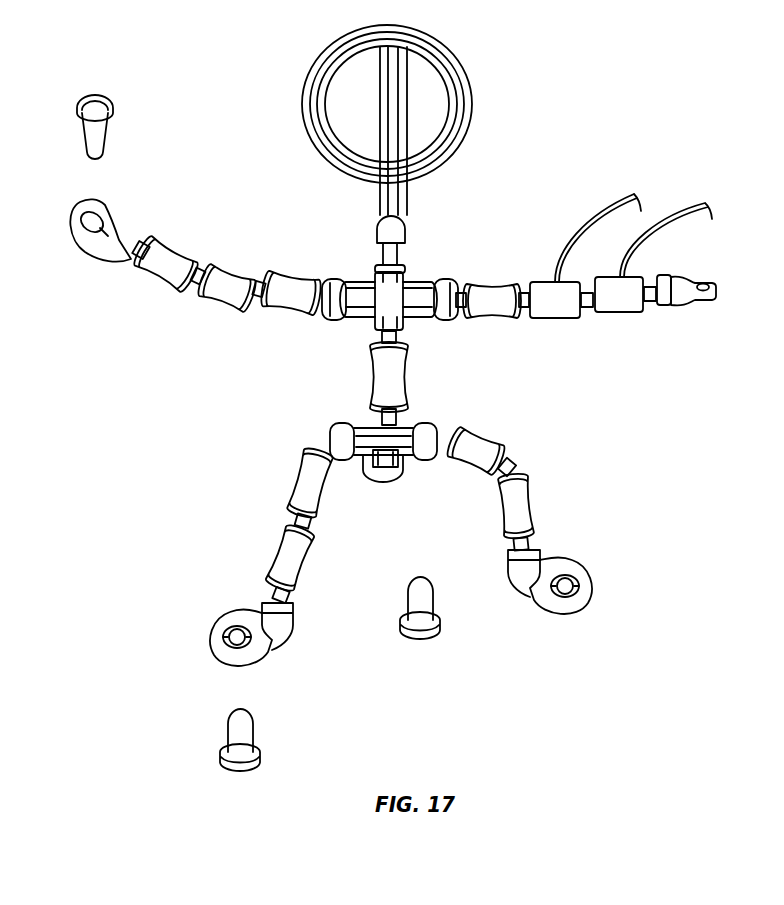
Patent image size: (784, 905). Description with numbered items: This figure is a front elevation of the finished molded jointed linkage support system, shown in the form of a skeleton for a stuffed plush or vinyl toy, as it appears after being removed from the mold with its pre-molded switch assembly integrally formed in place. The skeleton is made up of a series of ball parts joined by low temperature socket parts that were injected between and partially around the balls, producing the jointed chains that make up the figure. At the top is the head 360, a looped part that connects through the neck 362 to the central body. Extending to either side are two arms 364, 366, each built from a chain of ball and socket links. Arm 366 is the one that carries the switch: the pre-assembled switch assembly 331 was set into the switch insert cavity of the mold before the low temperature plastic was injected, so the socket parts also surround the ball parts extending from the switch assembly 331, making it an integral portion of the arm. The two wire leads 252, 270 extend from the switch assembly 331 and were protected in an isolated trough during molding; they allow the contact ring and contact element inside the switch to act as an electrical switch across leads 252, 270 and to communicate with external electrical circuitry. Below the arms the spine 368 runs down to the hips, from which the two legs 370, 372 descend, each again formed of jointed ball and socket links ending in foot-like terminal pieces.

The head 360 is at (483, 110).
The neck 362 is at (407, 232).
The arm 364 is at (158, 241).
The arm 366 is at (665, 308).
The spine 368 is at (373, 383).
The leg 370 is at (270, 568).
The leg 372 is at (533, 513).
The switch assembly 331 is at (546, 282).
The electrical lead 252 is at (636, 196).
The electrical lead 270 is at (709, 203).